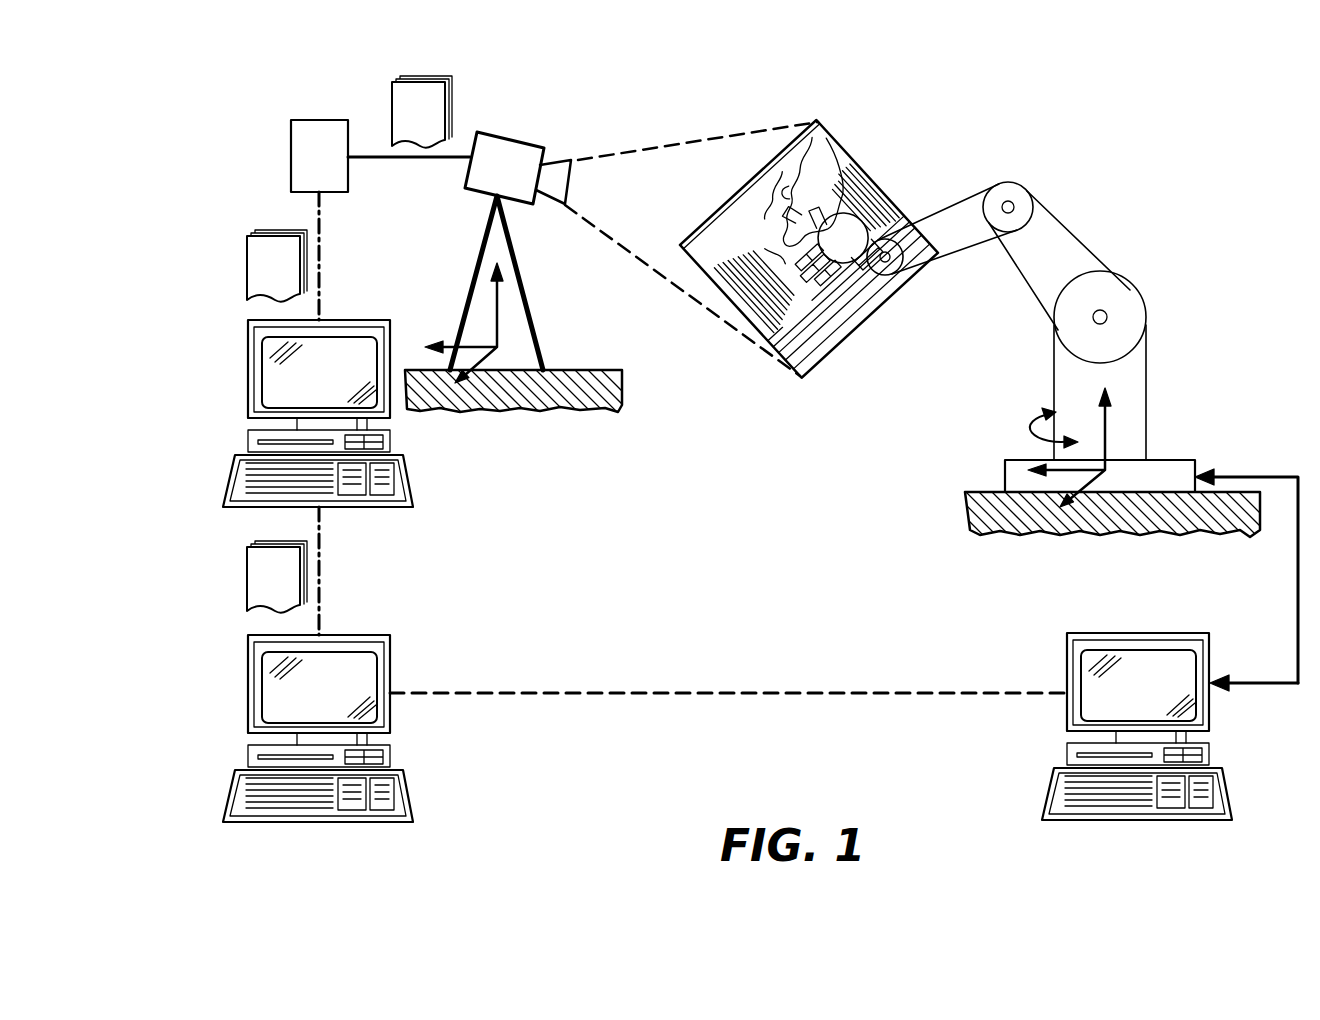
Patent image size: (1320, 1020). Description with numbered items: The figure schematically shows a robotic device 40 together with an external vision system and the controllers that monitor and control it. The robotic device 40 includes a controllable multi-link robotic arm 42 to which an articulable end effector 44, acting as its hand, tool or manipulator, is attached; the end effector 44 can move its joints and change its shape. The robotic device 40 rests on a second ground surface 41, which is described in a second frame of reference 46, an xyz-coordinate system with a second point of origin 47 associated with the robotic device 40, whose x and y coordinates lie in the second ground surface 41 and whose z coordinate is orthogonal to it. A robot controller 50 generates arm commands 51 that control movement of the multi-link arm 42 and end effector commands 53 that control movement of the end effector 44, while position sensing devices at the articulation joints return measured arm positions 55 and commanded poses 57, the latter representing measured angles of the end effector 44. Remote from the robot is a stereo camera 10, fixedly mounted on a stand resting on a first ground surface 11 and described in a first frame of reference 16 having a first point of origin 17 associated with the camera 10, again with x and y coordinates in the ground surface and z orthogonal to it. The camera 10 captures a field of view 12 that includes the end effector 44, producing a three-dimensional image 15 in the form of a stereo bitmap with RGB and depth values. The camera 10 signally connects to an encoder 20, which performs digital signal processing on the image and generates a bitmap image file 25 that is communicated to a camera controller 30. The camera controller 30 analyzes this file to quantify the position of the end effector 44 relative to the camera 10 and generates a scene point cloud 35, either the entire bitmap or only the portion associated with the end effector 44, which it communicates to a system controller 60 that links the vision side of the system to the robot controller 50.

The camera 10 is at (492, 180).
The first ground surface 11 is at (598, 388).
The field of view 12 is at (677, 143).
The 3D image 15 is at (408, 126).
The first frame of reference 16 is at (545, 323).
The first point of origin 17 is at (500, 353).
The encoder 20 is at (306, 169).
The bitmap image file 25 is at (261, 280).
The camera controller 30 is at (305, 384).
The scene point cloud 35 is at (261, 592).
The robotic device 40 is at (976, 308).
The second ground surface 41 is at (980, 508).
The multi-link robotic arm 42 is at (942, 232).
The articulable end effector 44 is at (842, 237).
The second frame of reference 46 is at (1145, 447).
The second point of origin 47 is at (1107, 448).
The robot controller 50 is at (1124, 697).
The arm commands 51 is at (1249, 565).
The end effector commands 53 is at (1249, 565).
The measured arm positions 55 is at (1260, 674).
The commanded poses 57 is at (1260, 674).
The system controller 60 is at (305, 699).